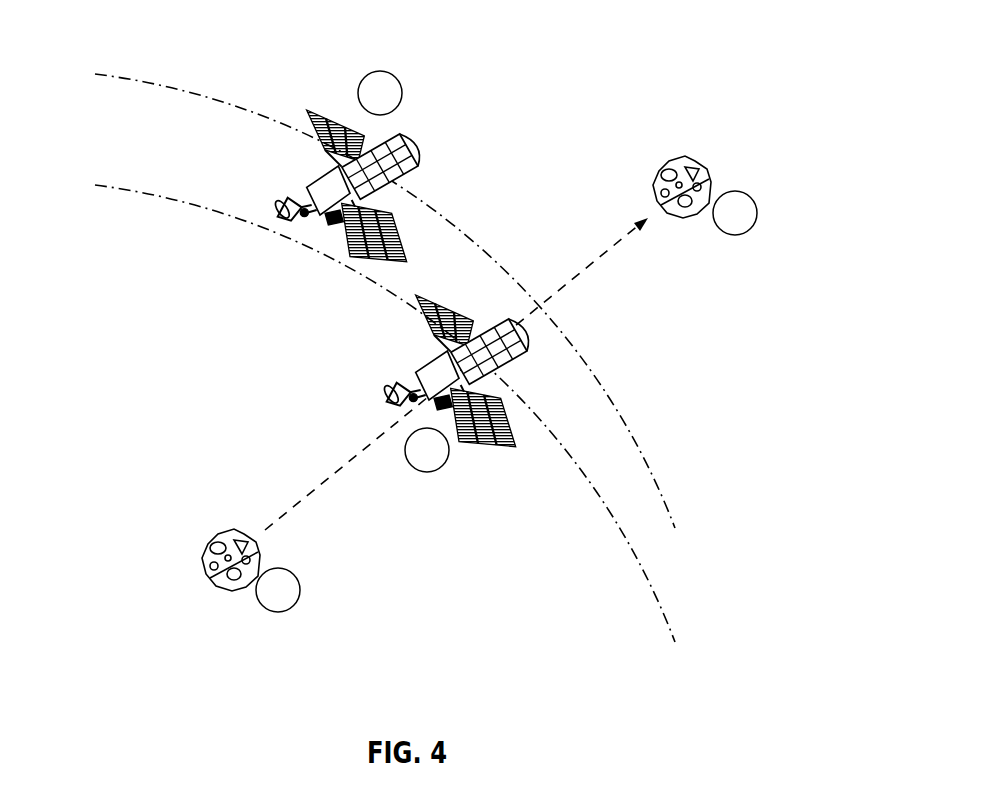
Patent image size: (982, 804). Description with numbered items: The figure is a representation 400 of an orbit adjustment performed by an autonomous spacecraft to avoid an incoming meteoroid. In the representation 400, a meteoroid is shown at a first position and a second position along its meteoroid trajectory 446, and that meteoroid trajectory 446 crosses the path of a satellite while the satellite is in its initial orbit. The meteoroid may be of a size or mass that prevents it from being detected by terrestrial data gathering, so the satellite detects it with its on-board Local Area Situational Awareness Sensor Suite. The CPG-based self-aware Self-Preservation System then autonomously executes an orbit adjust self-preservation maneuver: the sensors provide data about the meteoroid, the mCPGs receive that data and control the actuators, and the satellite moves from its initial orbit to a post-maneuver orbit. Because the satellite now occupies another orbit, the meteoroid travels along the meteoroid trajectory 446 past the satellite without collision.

The representation 400 is at (141, 34).
The meteoroid trajectory 446 is at (353, 460).